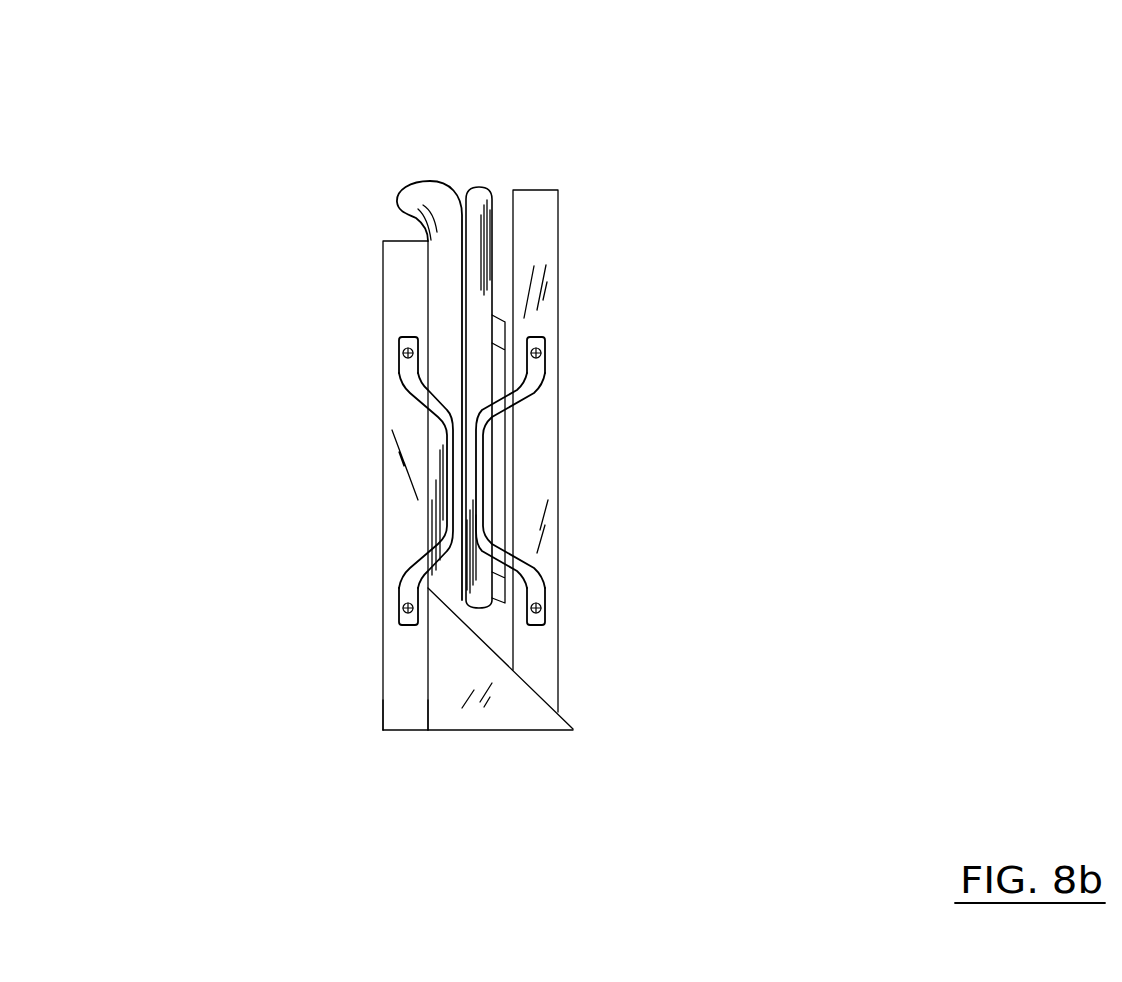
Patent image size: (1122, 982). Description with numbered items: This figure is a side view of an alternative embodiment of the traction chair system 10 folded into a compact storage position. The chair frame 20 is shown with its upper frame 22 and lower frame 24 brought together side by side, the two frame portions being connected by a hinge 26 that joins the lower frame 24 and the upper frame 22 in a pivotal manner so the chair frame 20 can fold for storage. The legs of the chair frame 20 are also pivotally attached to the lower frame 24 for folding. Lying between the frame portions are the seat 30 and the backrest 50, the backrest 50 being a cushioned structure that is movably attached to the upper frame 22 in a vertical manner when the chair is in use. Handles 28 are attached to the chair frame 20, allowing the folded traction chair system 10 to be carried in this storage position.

The traction chair system 10 is at (985, 109).
The chair frame 20 is at (390, 708).
The upper frame 22 is at (545, 230).
The lower frame 24 is at (395, 288).
The hinge 26 is at (512, 722).
The handle 28 is at (542, 365).
The seat 30 is at (412, 200).
The backrest 50 is at (483, 190).